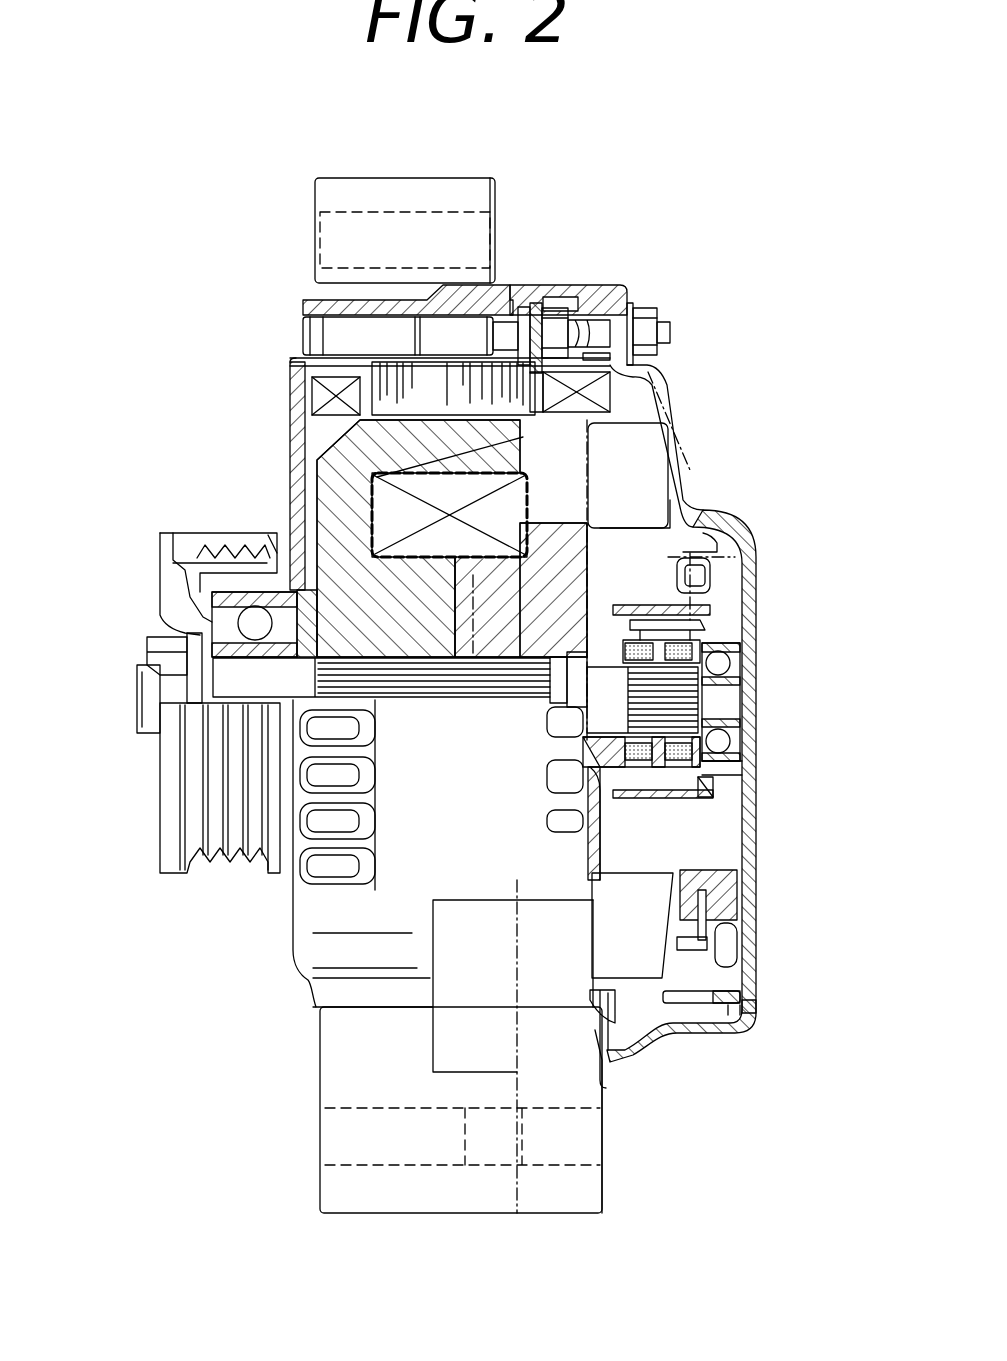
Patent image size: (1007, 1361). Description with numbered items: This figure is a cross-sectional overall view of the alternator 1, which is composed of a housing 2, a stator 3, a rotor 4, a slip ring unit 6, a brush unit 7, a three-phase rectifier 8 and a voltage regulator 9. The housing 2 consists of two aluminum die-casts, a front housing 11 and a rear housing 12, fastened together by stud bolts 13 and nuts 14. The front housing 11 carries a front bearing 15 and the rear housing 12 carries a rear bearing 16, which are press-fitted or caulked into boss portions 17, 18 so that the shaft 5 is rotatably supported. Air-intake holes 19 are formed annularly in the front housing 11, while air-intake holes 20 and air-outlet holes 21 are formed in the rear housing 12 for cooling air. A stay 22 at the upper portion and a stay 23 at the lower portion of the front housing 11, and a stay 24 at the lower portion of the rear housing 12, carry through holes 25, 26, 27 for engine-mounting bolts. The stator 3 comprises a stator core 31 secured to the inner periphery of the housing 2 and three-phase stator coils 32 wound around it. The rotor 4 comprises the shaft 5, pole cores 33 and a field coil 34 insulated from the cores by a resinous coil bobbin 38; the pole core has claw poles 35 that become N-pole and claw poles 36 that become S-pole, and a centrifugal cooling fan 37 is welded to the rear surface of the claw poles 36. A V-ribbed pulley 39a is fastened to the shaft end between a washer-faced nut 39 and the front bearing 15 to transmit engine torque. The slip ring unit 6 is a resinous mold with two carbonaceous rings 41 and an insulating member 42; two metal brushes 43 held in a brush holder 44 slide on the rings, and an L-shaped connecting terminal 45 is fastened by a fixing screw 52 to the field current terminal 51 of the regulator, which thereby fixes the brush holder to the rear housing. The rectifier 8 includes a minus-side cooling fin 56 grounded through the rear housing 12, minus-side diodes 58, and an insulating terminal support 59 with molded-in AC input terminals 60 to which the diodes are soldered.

The alternator 1 is at (248, 183).
The housing 2 is at (306, 1005).
The stator 3 is at (632, 399).
The rotor 4 is at (320, 435).
The shaft 5 is at (225, 690).
The slip ring unit 6 is at (749, 817).
The brush unit 7 is at (716, 602).
The three-phase rectifier 8 is at (672, 1040).
The voltage regulator 9 is at (707, 538).
The front housing 11 is at (295, 957).
The rear housing 12 is at (671, 1052).
The stud bolts 13 is at (535, 320).
The nuts 14 is at (615, 360).
The front bearing 15 is at (252, 627).
The rear bearing 16 is at (725, 767).
The boss portion 17 is at (247, 580).
The boss portion 18 is at (742, 793).
The air-intake holes 19 is at (295, 472).
The air-intake holes 20 is at (742, 818).
The air-outlet holes 21 is at (338, 882).
The stay 22 is at (345, 178).
The stay 23 is at (345, 1187).
The stay 24 is at (577, 1161).
The through hole 25 is at (385, 240).
The through hole 26 is at (410, 1177).
The through hole 27 is at (520, 1172).
The stator core 31 is at (405, 352).
The three-phase stator coils 32 is at (332, 395).
The pole cores 33 is at (405, 640).
The field coil 34 is at (498, 570).
The claw poles 35 is at (455, 398).
The claw poles 36 is at (590, 370).
The cooling fan 37 is at (658, 472).
The coil bobbin 38 is at (455, 648).
The washer-faced nut 39 is at (167, 683).
The V-ribbed pulley 39a is at (178, 802).
The carbonaceous rings 41 is at (673, 764).
The insulating member 42 is at (640, 764).
The metal brushes 43 is at (722, 743).
The brush holder 44 is at (712, 616).
The connecting terminal 45 is at (732, 636).
The field current terminal 51 is at (700, 557).
The fixing screw 52 is at (677, 574).
The minus-side cooling fin 56 is at (752, 1017).
The minus-side diodes 58 is at (742, 982).
The terminal support 59 is at (740, 892).
The AC input terminals 60 is at (738, 928).